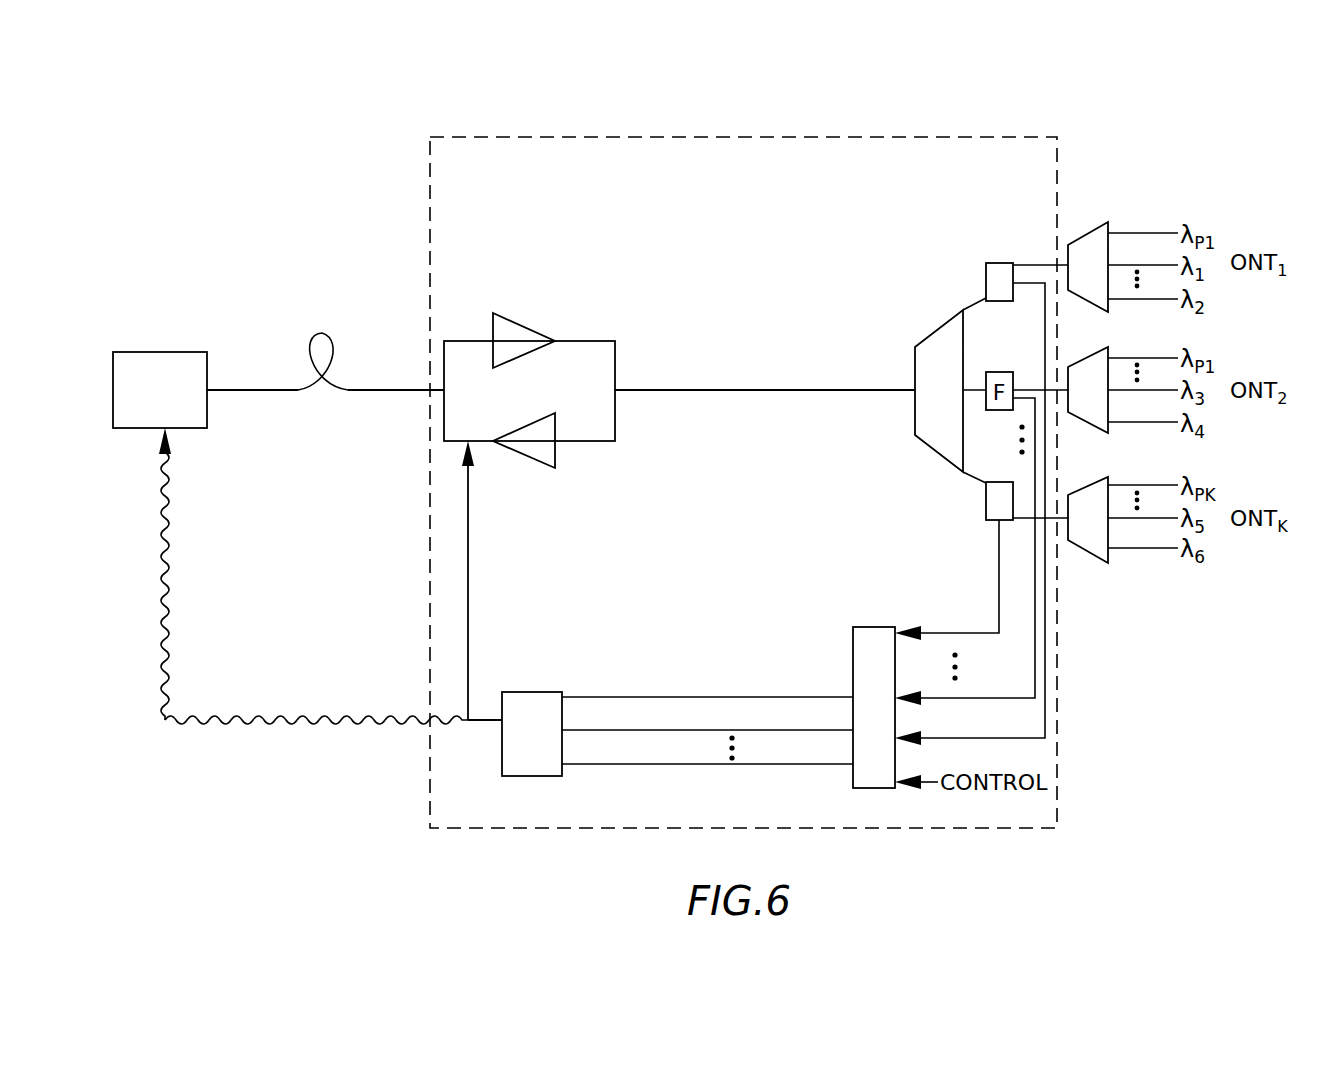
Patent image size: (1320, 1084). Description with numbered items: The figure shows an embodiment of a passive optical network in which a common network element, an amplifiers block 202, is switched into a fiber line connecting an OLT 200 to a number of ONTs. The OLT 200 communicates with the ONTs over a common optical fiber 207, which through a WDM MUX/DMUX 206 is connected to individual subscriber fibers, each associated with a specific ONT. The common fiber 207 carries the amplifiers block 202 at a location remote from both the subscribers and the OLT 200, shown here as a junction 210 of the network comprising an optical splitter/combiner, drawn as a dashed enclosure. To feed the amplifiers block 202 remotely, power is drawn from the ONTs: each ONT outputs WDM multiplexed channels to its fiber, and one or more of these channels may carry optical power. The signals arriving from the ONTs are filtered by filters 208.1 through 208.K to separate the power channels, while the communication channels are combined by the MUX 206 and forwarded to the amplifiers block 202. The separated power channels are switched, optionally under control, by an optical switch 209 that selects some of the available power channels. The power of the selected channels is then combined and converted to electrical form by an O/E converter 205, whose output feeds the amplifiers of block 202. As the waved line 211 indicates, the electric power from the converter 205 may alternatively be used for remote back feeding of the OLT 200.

The OLT 200 is at (160, 352).
The common amplifiers block 202 is at (553, 284).
The O/E converter 205 is at (533, 692).
The WDM MUX/DMUX 206 is at (938, 327).
The common optical fiber 207 is at (352, 390).
The filter 208.1 is at (997, 262).
The filter 208.K is at (980, 497).
The optical switch 209 is at (875, 788).
The junction 210 is at (990, 137).
The waved line 211 is at (168, 605).